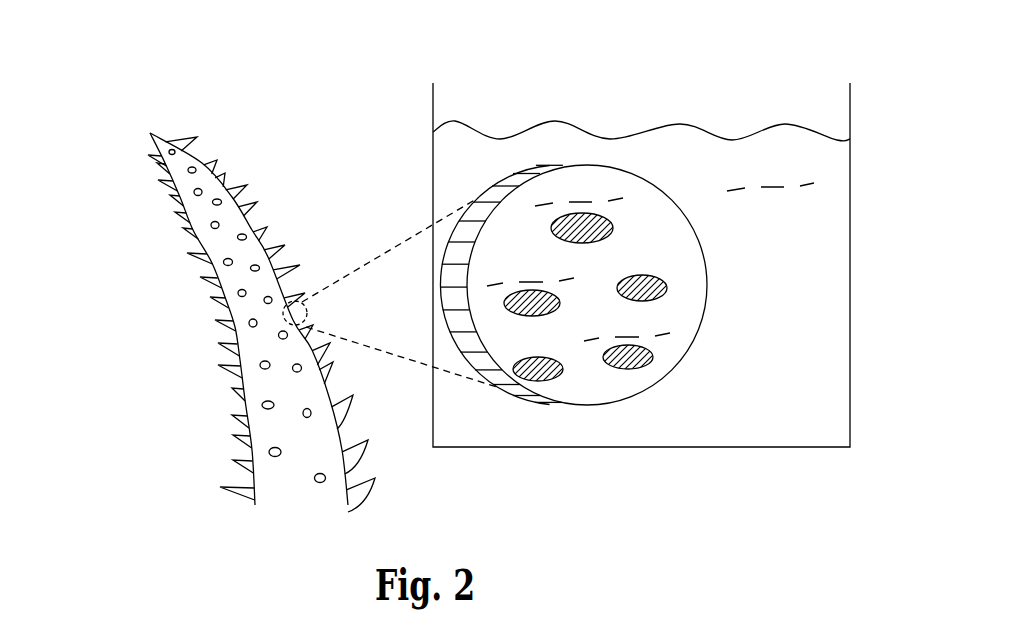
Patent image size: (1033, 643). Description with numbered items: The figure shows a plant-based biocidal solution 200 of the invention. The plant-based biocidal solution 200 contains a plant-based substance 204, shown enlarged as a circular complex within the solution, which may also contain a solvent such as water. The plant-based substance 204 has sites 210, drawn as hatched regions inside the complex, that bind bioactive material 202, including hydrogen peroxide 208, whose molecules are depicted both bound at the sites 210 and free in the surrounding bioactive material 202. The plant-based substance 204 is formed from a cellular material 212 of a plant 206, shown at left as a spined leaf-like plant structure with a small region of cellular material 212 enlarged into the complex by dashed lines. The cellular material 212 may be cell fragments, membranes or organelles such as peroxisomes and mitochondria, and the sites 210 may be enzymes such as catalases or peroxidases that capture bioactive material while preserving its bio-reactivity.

The plant-based biocidal solution 200 is at (718, 58).
The bioactive material 202 is at (757, 371).
The plant-based substance 204 is at (583, 404).
The plant 206 is at (125, 126).
The hydrogen peroxide 208 is at (772, 196).
The binding sites 210 is at (575, 243).
The cellular material 212 is at (302, 315).